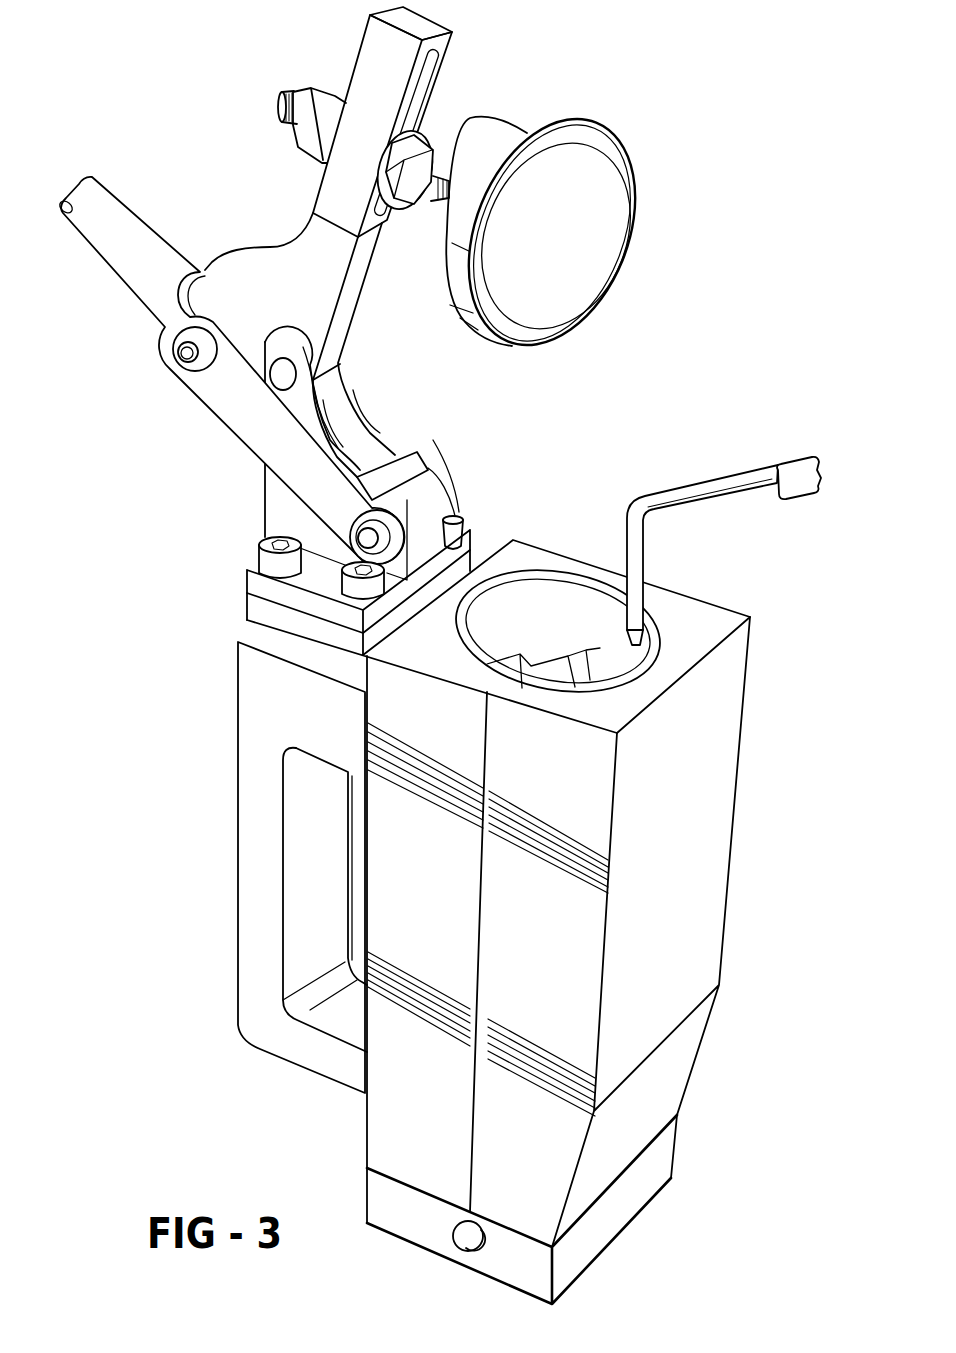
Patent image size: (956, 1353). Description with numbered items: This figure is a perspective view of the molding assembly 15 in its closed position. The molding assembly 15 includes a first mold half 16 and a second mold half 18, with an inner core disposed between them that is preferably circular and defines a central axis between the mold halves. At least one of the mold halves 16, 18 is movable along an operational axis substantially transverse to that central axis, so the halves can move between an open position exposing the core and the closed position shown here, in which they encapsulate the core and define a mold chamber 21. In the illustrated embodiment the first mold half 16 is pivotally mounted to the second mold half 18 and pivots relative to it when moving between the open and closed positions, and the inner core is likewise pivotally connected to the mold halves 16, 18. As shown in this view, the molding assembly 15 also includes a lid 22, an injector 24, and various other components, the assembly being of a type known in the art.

The molding assembly 15 is at (436, 655).
The first mold half 16 is at (531, 897).
The second mold half 18 is at (410, 1085).
The mold chamber 21 is at (565, 613).
The lid 22 is at (597, 222).
The injector 24 is at (732, 482).